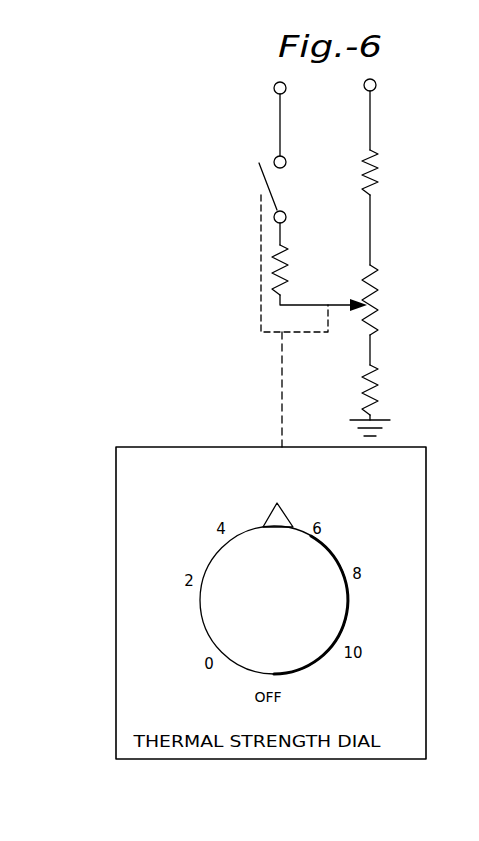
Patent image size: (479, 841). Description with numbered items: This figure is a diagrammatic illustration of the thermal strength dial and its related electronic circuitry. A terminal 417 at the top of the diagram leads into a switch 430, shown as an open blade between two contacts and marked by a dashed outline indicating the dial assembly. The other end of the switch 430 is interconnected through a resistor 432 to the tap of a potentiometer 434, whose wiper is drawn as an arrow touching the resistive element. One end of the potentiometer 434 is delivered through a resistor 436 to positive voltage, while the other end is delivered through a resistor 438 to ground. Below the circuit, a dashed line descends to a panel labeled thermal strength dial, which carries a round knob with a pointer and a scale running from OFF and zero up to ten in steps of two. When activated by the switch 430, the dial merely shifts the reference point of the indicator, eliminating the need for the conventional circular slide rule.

The switch 417 is at (280, 125).
The switch 430 is at (228, 199).
The resistor 432 is at (283, 278).
The potentiometer 434 is at (383, 311).
The resistor 436 is at (373, 188).
The resistor 438 is at (368, 398).